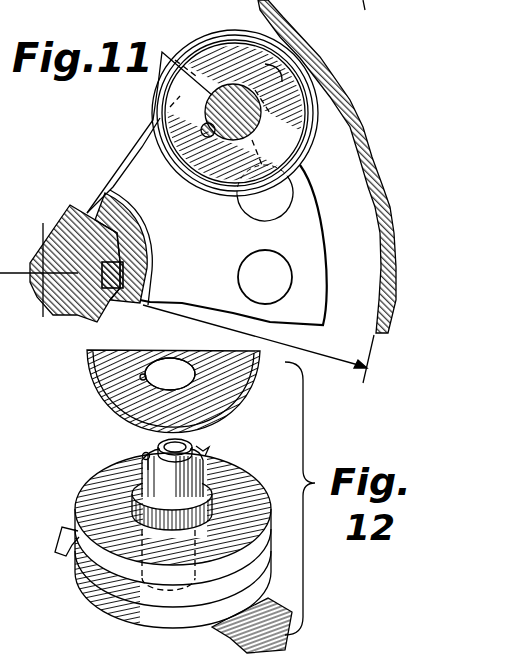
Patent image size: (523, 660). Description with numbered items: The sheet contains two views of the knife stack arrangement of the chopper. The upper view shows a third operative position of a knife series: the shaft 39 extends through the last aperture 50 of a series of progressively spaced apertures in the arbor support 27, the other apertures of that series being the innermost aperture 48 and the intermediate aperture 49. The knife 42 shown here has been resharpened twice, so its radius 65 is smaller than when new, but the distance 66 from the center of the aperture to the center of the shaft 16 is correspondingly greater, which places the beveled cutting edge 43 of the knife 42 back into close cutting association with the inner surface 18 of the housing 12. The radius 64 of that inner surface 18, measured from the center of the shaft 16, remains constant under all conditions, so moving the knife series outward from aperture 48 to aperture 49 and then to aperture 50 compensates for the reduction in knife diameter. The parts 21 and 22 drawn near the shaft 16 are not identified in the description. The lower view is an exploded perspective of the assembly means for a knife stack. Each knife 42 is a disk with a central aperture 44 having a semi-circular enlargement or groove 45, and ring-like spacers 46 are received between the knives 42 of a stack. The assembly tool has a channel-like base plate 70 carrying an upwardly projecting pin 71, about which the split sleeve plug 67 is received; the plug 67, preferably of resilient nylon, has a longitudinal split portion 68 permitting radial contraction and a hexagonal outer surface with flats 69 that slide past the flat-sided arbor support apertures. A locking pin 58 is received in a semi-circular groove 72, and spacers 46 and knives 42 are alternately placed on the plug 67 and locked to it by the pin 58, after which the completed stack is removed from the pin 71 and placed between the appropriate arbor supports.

In FIG. 11, the housing 12 is at (329, 74).
In FIG. 11, the shaft 16 is at (60, 228).
In FIG. 11, the inner surface 18 is at (365, 162).
In FIG. 11, the lever arcuate portion 21 is at (131, 219).
In FIG. 11, the square key 22 is at (125, 256).
In FIG. 11, the arbor support 27 is at (313, 235).
In FIG. 11, the shaft 39 is at (256, 86).
In FIG. 11, the knife 42 is at (227, 34).
In FIG. 12, the knife 42 is at (86, 352).
In FIG. 11, the beveled cutting edge 43 is at (252, 33).
In FIG. 12, the beveled cutting edge 43 is at (88, 380).
In FIG. 12, the central aperture 44 is at (179, 360).
In FIG. 12, the semi-circular groove 45 is at (141, 380).
In FIG. 12, the ring-like spacer 46 is at (295, 498).
In FIG. 11, the innermost aperture 48 is at (288, 278).
In FIG. 11, the aperture 49 is at (283, 188).
In FIG. 11, the last aperture 50 is at (205, 118).
In FIG. 11, the locking pin 58 is at (207, 138).
In FIG. 12, the locking pin 58 is at (143, 454).
In FIG. 11, the radius of inner surface 64 is at (318, 356).
In FIG. 11, the radius of knife 65 is at (281, 83).
In FIG. 11, the distance 66 is at (139, 140).
In FIG. 12, the plug 67 is at (194, 446).
In FIG. 12, the longitudinal split portion 68 is at (200, 484).
In FIG. 12, the flats 69 is at (193, 451).
In FIG. 12, the channel-like base plate 70 is at (232, 627).
In FIG. 12, the upwardly projecting pin 71 is at (173, 443).
In FIG. 12, the semi-circular groove 72 is at (148, 453).